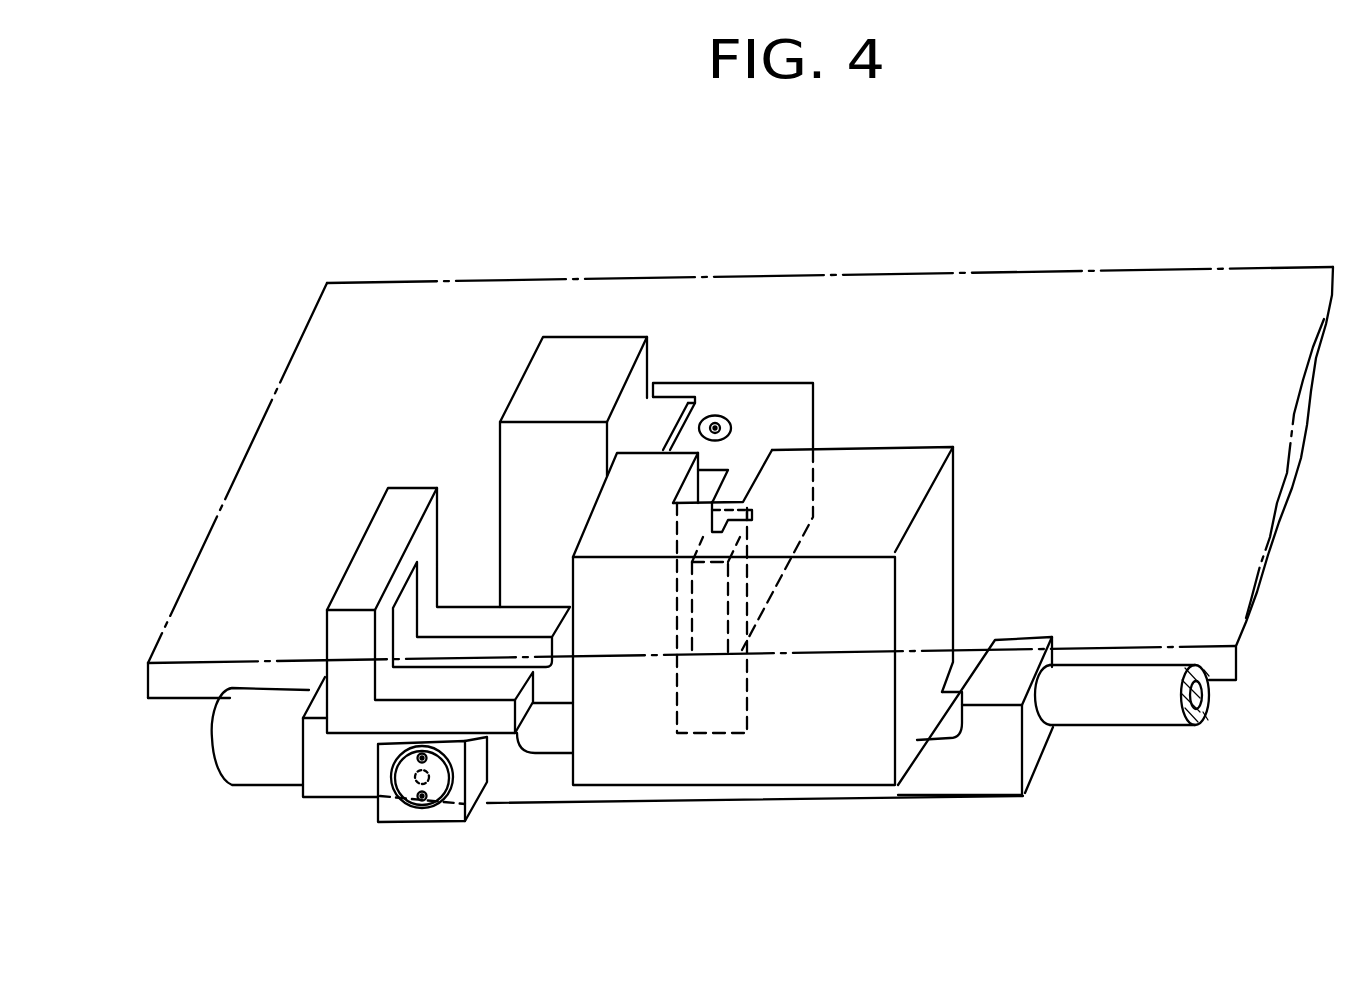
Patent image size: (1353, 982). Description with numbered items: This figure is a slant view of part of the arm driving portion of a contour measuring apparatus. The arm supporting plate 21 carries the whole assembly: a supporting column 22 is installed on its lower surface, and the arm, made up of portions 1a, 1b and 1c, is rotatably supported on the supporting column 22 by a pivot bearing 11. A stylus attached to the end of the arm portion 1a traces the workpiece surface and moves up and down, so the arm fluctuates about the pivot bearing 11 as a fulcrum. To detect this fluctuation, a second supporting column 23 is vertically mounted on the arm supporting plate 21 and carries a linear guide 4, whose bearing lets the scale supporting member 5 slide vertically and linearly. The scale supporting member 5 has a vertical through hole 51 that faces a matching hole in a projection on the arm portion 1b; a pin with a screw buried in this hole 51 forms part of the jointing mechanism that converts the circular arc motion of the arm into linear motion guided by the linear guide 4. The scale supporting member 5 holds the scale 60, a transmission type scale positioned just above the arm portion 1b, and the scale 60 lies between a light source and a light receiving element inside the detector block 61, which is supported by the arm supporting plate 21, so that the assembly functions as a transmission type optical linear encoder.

The arm supporting plate 21 is at (965, 275).
The supporting column 23 is at (537, 373).
The linear guide 4 is at (668, 408).
The vertical through hole 51 is at (718, 416).
The scale supporting member 5 is at (792, 390).
The detector block 61 is at (818, 768).
The scale 60 is at (712, 652).
The supporting column 22 is at (333, 642).
The arm 1a is at (253, 770).
The pivot bearing 11 is at (390, 813).
The arm 1b is at (975, 775).
The arm 1c is at (1123, 713).